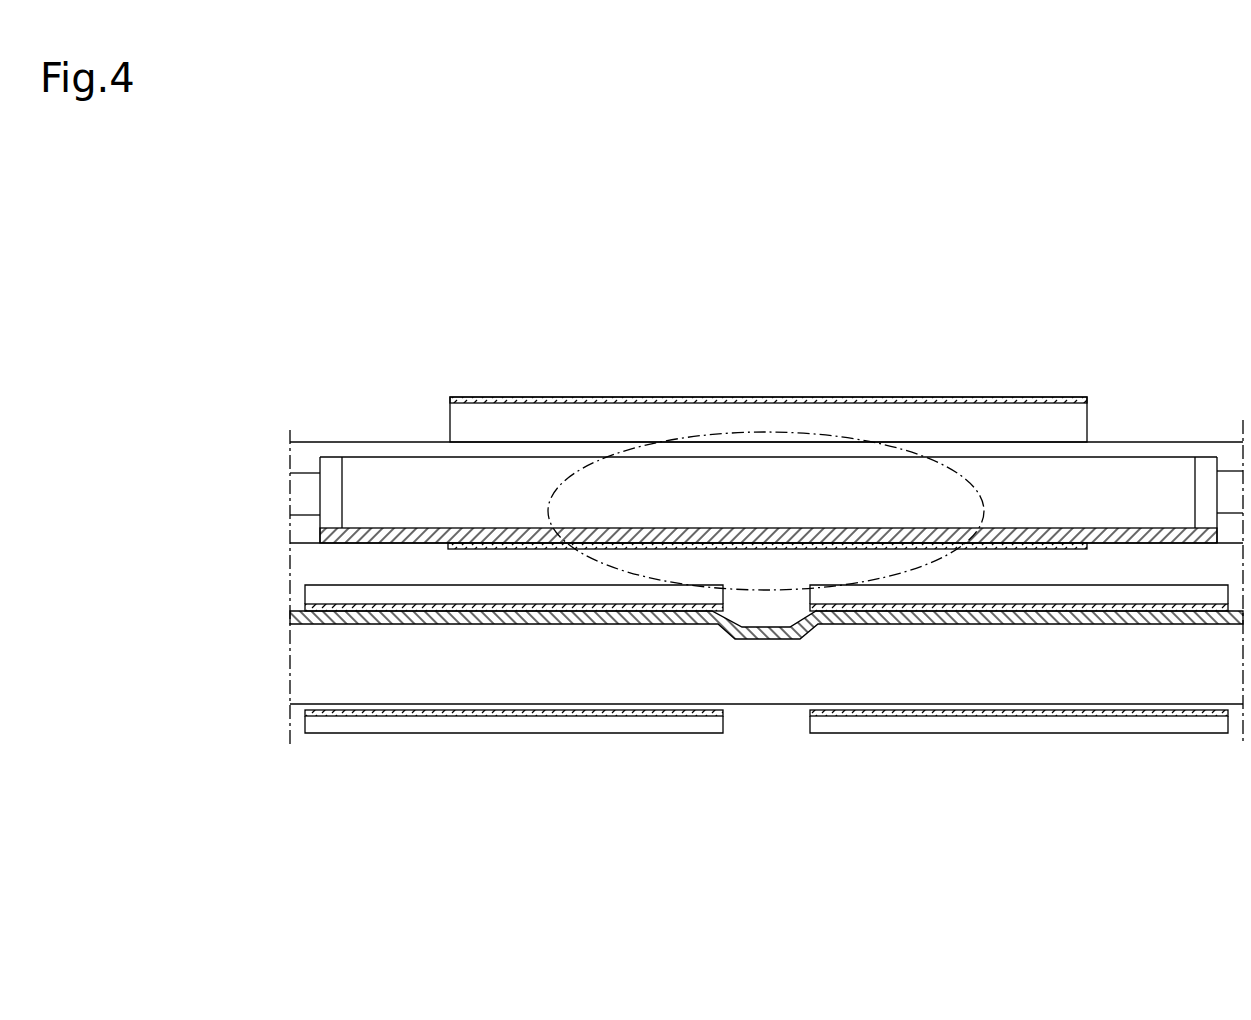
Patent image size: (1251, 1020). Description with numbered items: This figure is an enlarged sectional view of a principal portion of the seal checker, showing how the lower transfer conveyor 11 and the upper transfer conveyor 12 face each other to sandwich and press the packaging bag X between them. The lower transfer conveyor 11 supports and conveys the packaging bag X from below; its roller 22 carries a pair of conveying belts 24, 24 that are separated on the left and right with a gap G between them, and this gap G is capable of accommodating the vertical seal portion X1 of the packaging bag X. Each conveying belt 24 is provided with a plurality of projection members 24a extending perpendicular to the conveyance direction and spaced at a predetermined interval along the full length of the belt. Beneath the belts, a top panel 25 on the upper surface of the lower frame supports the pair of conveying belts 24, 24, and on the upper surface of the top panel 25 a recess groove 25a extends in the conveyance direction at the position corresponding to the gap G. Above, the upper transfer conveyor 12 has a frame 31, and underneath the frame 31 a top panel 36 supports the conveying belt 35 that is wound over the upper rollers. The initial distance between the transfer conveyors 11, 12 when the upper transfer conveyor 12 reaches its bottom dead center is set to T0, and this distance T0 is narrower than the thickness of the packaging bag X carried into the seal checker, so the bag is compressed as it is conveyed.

The lower transfer conveyor 11 is at (1143, 754).
The upper transfer conveyor 12 is at (1143, 422).
The roller 22 is at (297, 713).
The conveying belt 24 is at (475, 718).
The projection member 24a is at (432, 597).
The top panel 25 is at (1112, 618).
The recess groove 25a is at (743, 641).
The frame 31 is at (408, 440).
The conveying belt 35 is at (452, 548).
The top panel 36 is at (1125, 535).
The packaging bag X is at (873, 432).
The vertical seal portion X1 is at (783, 630).
The gap G is at (795, 585).
The distance T0 is at (1043, 603).